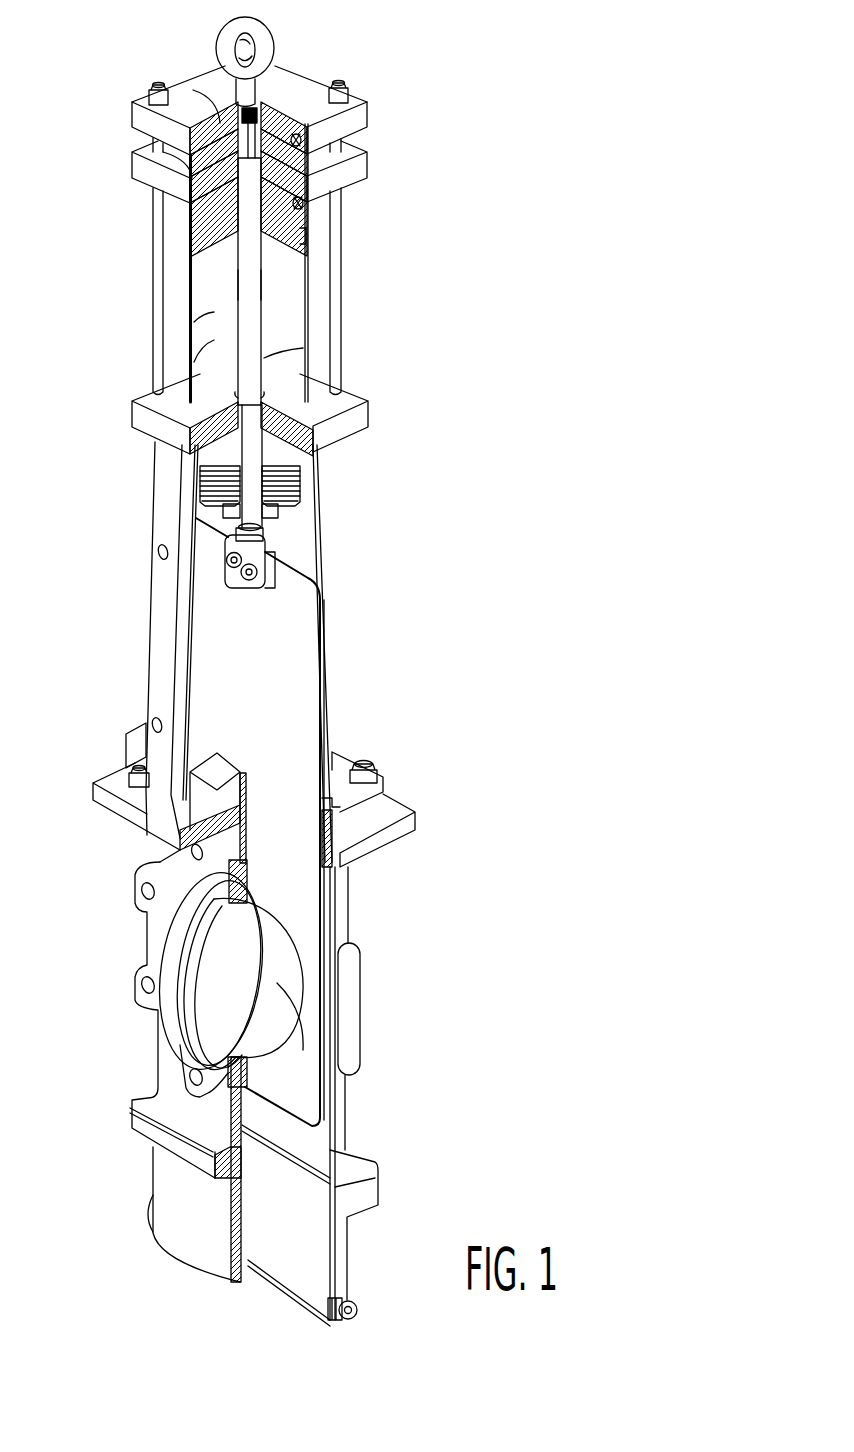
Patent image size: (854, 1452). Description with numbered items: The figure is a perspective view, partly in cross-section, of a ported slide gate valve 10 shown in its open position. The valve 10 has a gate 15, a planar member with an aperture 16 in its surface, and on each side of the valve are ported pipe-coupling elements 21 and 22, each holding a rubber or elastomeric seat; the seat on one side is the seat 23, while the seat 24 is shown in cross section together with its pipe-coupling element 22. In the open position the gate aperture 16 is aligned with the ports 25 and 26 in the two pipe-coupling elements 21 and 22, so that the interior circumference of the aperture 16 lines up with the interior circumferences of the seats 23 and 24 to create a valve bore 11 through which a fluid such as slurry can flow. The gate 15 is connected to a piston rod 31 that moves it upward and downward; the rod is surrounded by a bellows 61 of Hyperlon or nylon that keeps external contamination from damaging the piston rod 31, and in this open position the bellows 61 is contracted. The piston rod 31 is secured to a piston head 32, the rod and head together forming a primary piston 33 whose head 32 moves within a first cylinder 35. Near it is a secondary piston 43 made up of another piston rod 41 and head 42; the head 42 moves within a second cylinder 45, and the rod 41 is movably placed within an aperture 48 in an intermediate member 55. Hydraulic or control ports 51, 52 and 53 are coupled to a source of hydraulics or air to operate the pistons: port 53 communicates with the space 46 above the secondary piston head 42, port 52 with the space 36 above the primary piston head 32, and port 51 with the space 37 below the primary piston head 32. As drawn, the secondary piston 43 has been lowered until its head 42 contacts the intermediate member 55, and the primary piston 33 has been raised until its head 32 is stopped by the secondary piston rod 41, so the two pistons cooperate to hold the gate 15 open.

The ported slide gate valve 10 is at (394, 604).
The valve bore 11 is at (343, 1078).
The gate 15 is at (312, 674).
The aperture 16 is at (227, 1004).
The pipe-coupling element 21 is at (137, 921).
The pipe-coupling element 22 is at (363, 983).
The seat 23 is at (167, 947).
The seat 24 is at (273, 1026).
The port 25 is at (187, 977).
The port 26 is at (207, 960).
The piston rod 31 is at (247, 329).
The piston head 32 is at (307, 246).
The primary piston 33 is at (247, 287).
The first cylinder 35 is at (211, 317).
The space 36 is at (192, 231).
The space 37 is at (212, 341).
The piston rod 41 is at (218, 150).
The head 42 is at (318, 164).
The secondary piston 43 is at (262, 138).
The second cylinder 45 is at (169, 166).
The space 46 is at (172, 156).
The aperture 48 is at (313, 254).
The control port 51 is at (308, 436).
The control port 52 is at (308, 208).
The control port 53 is at (313, 146).
The intermediate member 55 is at (188, 198).
The bellows 61 is at (290, 474).